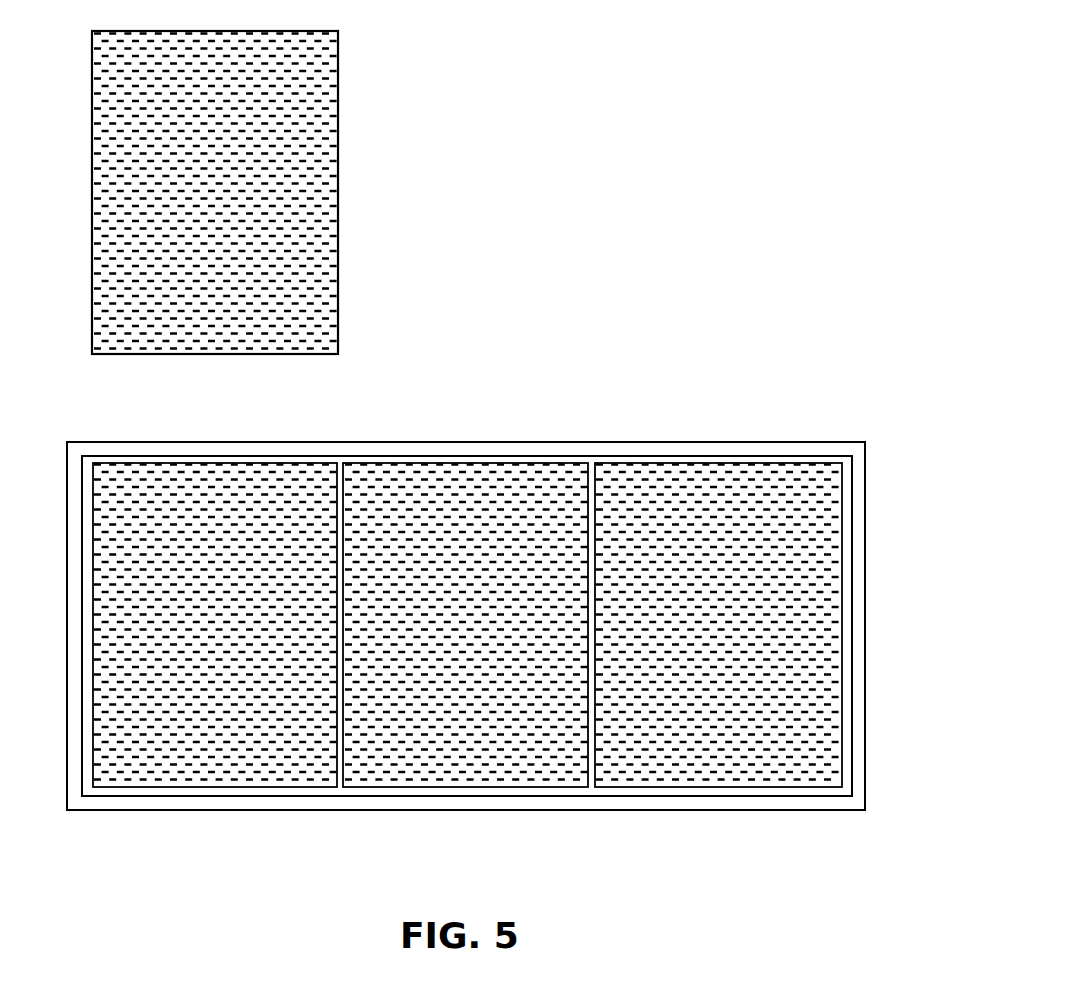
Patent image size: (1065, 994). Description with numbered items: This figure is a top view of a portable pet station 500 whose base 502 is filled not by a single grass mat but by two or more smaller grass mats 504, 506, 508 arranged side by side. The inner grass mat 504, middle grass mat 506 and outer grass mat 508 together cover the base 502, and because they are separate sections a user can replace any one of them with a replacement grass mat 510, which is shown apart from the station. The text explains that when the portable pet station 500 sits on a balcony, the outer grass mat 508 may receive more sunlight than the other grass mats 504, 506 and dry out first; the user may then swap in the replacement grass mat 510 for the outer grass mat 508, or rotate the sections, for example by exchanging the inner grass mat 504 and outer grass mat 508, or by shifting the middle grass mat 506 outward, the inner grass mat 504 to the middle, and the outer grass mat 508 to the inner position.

The portable pet station 500 is at (947, 87).
The base 502 is at (857, 645).
The inner grass mat 504 is at (203, 770).
The middle grass mat 506 is at (471, 770).
The outer grass mat 508 is at (741, 766).
The replacement grass mat 510 is at (338, 184).